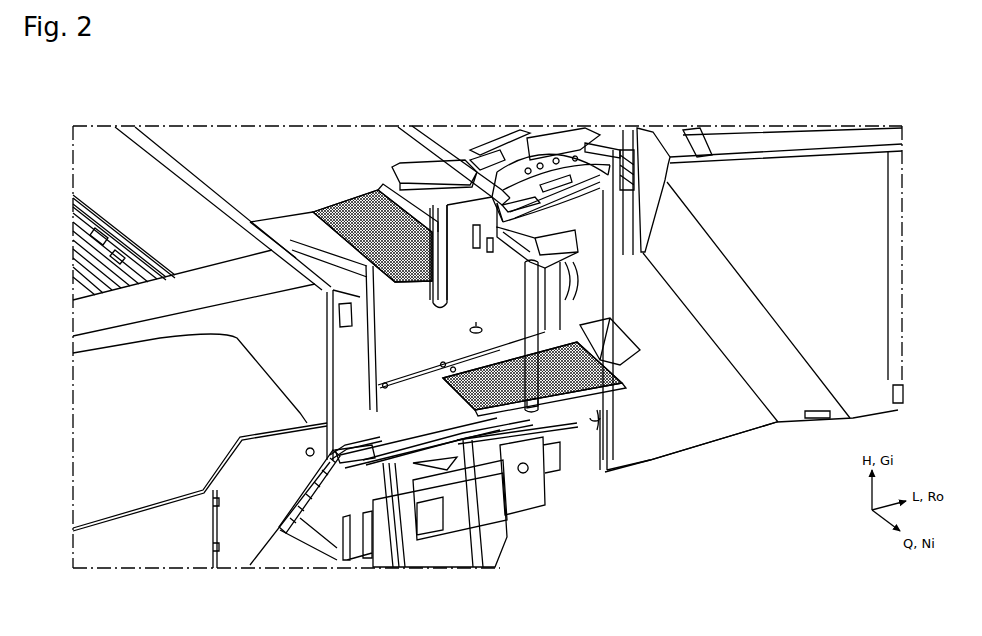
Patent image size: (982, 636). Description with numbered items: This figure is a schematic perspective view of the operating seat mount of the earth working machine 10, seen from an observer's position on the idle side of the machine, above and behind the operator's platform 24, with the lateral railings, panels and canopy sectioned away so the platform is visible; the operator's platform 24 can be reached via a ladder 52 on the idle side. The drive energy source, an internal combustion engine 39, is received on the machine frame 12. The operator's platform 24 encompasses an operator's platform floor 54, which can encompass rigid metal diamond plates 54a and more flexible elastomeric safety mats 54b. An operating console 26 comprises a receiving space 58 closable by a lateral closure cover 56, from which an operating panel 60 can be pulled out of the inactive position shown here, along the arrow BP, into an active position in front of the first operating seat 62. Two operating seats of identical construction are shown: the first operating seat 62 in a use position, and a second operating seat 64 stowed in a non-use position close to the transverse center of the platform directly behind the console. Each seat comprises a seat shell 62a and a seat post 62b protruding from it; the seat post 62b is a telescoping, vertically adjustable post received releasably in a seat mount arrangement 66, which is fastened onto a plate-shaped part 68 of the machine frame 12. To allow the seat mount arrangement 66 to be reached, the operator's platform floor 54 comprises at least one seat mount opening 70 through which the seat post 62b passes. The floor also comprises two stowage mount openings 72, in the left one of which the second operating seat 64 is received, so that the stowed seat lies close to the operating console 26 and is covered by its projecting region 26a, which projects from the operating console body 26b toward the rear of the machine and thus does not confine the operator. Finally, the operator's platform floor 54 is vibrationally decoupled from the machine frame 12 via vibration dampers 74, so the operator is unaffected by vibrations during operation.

The earth working machine 10 is at (73, 124).
The machine frame 12 is at (697, 434).
The operator's platform 24 is at (283, 146).
The operating console 26 is at (517, 126).
The projecting region 26a is at (401, 126).
The operating console body 26b is at (568, 312).
The internal combustion engine 39 is at (98, 256).
The ladder 52 is at (413, 568).
The operator's platform floor 54 is at (410, 320).
The diamond plates 54a is at (433, 327).
The elastomeric safety mats 54b is at (346, 203).
The lateral closure cover 56 is at (543, 223).
The receiving space 58 is at (516, 209).
The operating panel 60 is at (548, 157).
The first operating seat 62 is at (516, 268).
The seat shell 62a is at (497, 229).
The seat post 62b is at (528, 327).
The second operating seat 64 is at (378, 169).
The seat mount arrangement 66 is at (545, 425).
The plate-shaped part 68 is at (571, 430).
The seat mount opening 70 is at (538, 402).
The stowage mount openings 72 is at (474, 322).
The vibration dampers 74 is at (504, 434).
The arrow BP is at (564, 198).